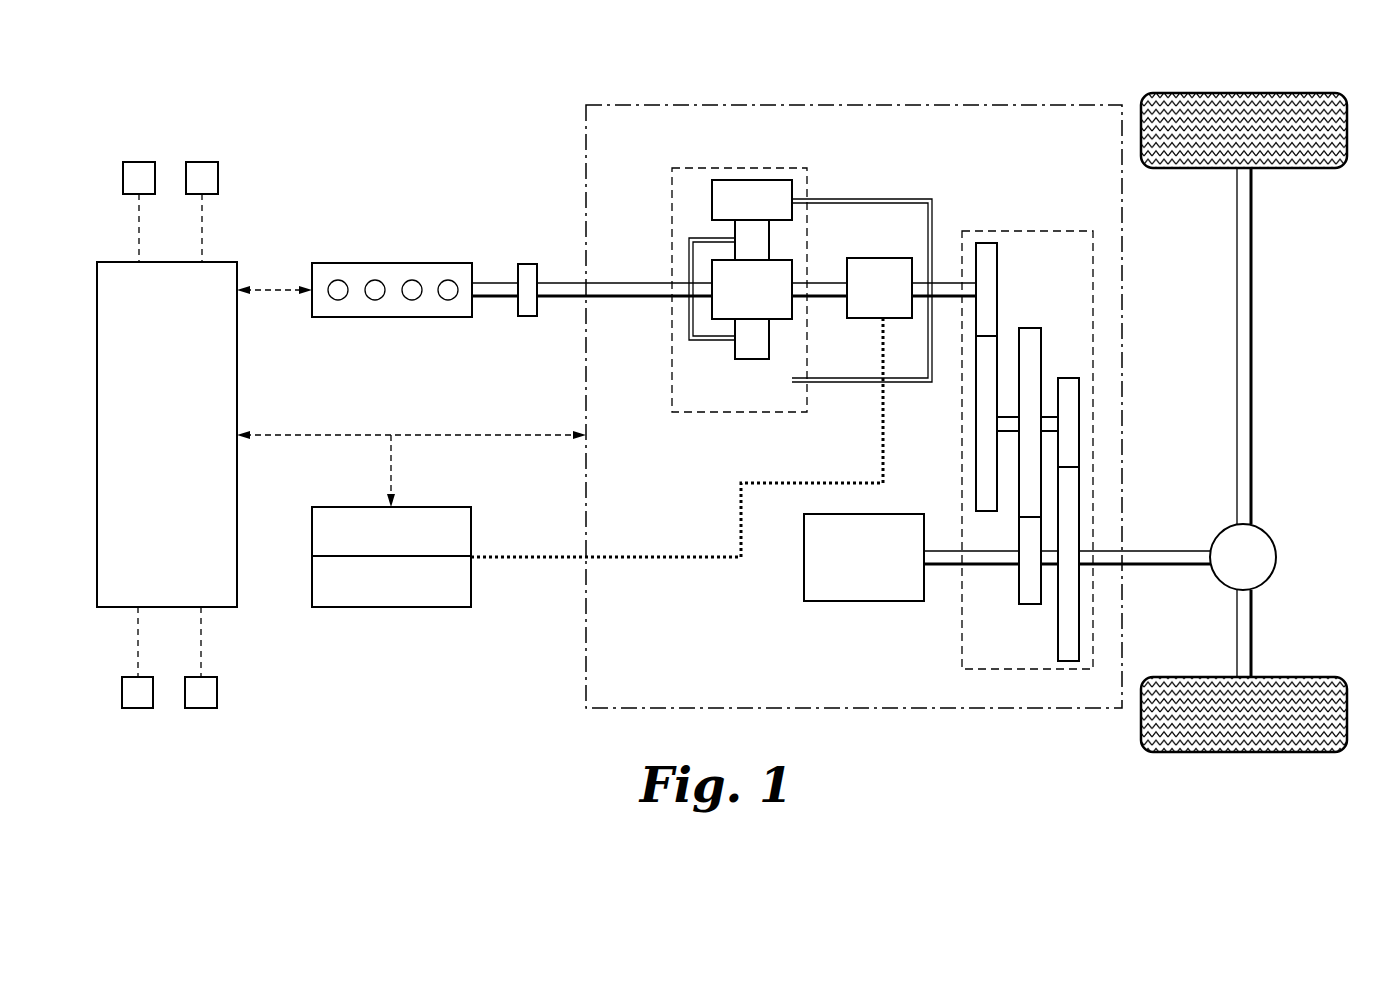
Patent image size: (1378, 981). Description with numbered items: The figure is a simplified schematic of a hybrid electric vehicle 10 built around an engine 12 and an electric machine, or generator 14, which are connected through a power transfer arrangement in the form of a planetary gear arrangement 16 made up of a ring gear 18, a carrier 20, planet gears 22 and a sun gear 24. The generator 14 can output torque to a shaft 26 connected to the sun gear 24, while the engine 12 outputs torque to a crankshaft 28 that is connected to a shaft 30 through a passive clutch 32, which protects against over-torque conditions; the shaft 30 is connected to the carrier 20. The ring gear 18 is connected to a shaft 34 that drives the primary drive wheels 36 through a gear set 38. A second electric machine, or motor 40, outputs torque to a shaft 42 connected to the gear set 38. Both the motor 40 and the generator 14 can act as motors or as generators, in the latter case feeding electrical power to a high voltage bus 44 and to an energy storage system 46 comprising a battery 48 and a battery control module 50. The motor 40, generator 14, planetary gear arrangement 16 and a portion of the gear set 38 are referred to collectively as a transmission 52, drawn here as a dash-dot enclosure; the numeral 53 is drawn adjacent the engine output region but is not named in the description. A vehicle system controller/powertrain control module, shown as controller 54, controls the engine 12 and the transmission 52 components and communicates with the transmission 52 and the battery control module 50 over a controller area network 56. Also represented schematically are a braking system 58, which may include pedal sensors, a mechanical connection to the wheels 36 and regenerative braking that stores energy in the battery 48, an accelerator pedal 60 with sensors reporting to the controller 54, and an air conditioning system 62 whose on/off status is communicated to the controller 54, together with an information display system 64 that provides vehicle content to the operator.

The vehicle 10 is at (1078, 54).
The engine 12 is at (358, 263).
The generator 14 is at (882, 258).
The planetary gear arrangement 16 is at (742, 168).
The ring gear 18 is at (712, 198).
The carrier 20 is at (689, 256).
The planet gears 22 is at (735, 236).
The sun gear 24 is at (793, 318).
The shaft 26 is at (826, 283).
The crankshaft 28 is at (503, 298).
The shaft 30 is at (565, 298).
The passive clutch 32 is at (530, 263).
The shaft 34 is at (955, 283).
The primary drive wheels 36 is at (1281, 182).
The gear set 38 is at (1035, 684).
The motor 40 is at (866, 601).
The shaft 42 is at (948, 551).
The high voltage bus 44 is at (683, 555).
The energy storage system 46 is at (302, 550).
The battery 48 is at (445, 507).
The battery control module 50 is at (447, 607).
The transmission 52 is at (575, 146).
The powertrain mechanical system 53 is at (466, 181).
The controller 54 is at (216, 262).
The controller area network 56 is at (333, 435).
The braking system 58 is at (138, 708).
The accelerator pedal 60 is at (203, 708).
The air conditioning system 62 is at (202, 162).
The information display system 64 is at (139, 162).